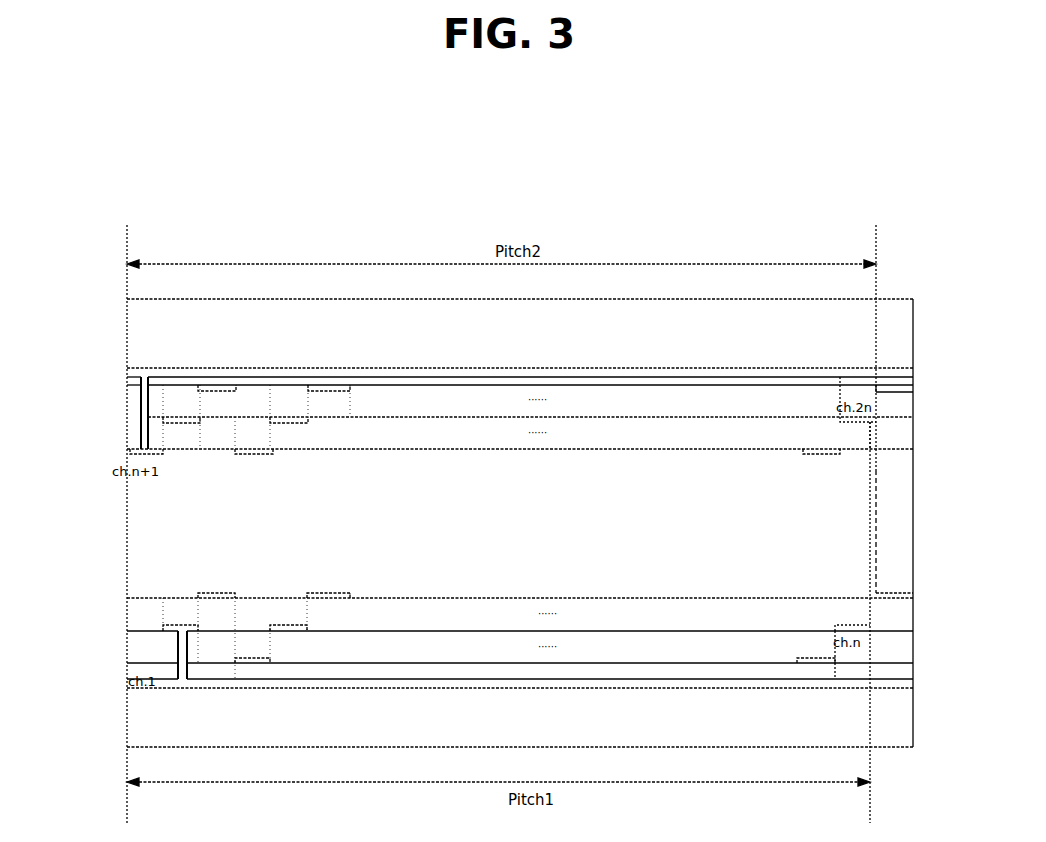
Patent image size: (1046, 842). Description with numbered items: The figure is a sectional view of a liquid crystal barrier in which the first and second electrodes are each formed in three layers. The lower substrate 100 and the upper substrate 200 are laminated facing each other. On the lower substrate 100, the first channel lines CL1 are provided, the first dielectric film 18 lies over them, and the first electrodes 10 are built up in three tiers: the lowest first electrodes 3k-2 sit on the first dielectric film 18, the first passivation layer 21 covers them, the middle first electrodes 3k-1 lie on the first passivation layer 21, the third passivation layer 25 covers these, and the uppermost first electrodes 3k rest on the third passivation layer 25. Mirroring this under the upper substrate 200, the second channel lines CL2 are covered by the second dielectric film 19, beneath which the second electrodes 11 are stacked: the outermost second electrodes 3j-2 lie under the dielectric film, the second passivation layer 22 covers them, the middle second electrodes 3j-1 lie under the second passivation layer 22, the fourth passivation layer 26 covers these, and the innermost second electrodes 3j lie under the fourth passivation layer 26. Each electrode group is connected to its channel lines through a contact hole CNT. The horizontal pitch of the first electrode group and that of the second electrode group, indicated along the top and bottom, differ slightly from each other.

The upper substrate 200 is at (147, 328).
The lower substrate 100 is at (137, 731).
The second channel lines CL2 is at (127, 371).
The first channel lines CL1 is at (242, 684).
The contact hole CNT is at (146, 409).
The second electrodes 11 is at (127, 452).
The first electrodes 10 is at (127, 663).
The first dielectric film 18 is at (127, 679).
The second dielectric film 19 is at (913, 380).
The second passivation layer 22 is at (897, 403).
The fourth passivation layer 26 is at (898, 433).
The third passivation layer 25 is at (888, 612).
The first passivation layer 21 is at (900, 646).
The 3j-th second electrodes 3j is at (894, 376).
The (3j−1)-th second electrodes 3j-1 is at (854, 436).
The (3j−2)-th second electrodes 3j-2 is at (819, 463).
The 3k-th first electrodes 3k is at (894, 584).
The (3k−1)-th first electrodes 3k-1 is at (849, 622).
The (3k−2)-th first electrodes 3k-2 is at (804, 678).